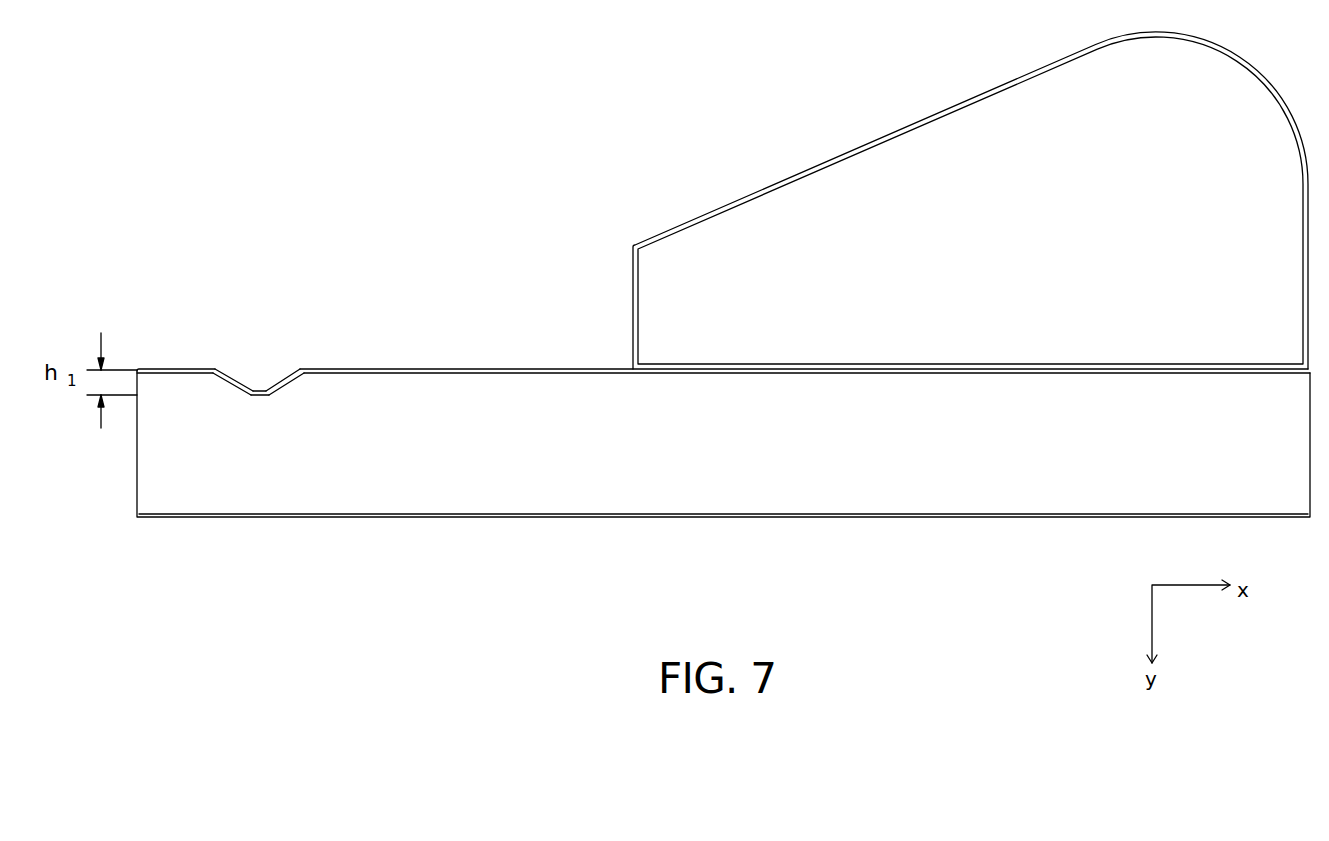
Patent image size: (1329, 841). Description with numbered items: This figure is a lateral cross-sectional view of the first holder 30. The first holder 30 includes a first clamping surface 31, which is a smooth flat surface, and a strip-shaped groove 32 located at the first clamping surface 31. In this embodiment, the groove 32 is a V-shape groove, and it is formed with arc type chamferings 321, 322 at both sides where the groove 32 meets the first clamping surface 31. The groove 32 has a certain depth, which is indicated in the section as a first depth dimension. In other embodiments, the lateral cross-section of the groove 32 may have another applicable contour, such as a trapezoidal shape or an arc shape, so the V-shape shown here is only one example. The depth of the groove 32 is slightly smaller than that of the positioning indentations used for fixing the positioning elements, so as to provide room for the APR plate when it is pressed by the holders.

The first holder 30 is at (723, 302).
The first clamping surface 31 is at (483, 369).
The groove 32 is at (276, 424).
The arc type chamfering 321 is at (217, 367).
The arc type chamfering 322 is at (303, 368).